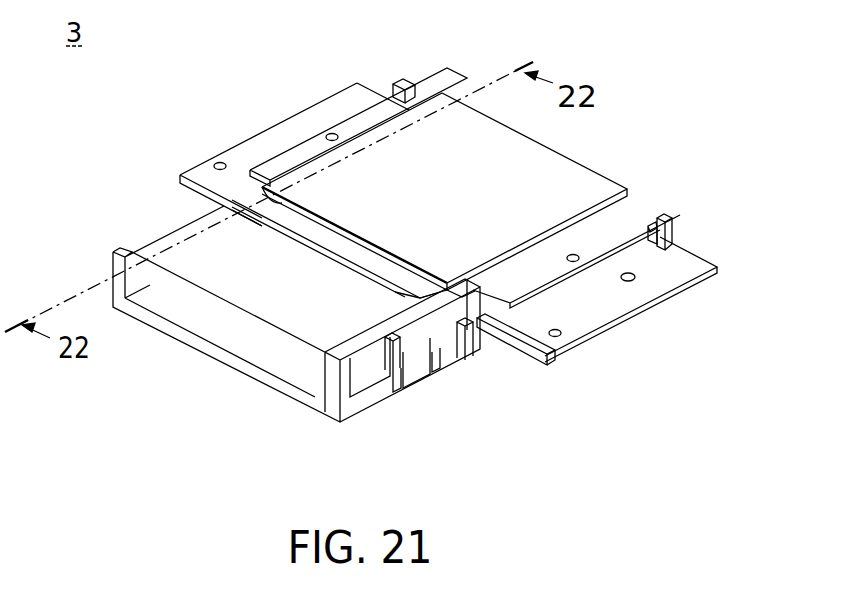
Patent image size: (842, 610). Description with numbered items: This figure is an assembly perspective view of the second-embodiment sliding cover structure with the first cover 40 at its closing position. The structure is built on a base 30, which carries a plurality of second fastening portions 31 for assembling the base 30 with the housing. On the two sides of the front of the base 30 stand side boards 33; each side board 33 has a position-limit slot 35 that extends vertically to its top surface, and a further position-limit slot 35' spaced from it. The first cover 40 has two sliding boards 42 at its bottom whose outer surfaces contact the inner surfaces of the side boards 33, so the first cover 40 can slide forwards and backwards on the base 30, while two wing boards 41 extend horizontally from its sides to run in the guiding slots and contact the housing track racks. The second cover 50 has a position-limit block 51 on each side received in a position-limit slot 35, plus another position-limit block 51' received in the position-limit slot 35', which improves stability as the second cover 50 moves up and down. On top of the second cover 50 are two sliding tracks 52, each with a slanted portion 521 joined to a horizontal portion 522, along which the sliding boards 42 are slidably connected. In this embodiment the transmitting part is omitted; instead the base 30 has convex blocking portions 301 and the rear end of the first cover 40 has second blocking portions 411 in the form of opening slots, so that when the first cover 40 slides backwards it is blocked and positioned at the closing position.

The base 30 is at (200, 362).
The second fastening portion 31 is at (627, 283).
The side board 33 is at (420, 363).
The position-limit slot 35 is at (389, 411).
The position-limit slot 35' is at (460, 398).
The first cover 40 is at (602, 168).
The wing board 41 is at (627, 247).
The sliding board 42 is at (543, 343).
The second cover 50 is at (159, 238).
The position-limit block 51 is at (361, 323).
The position-limit block 51' is at (489, 357).
The sliding track 52 is at (392, 183).
The slanted portion 521 is at (450, 297).
The horizontal portion 522 is at (395, 298).
The blocking portion 301 is at (675, 232).
The second blocking portion 411 is at (657, 217).